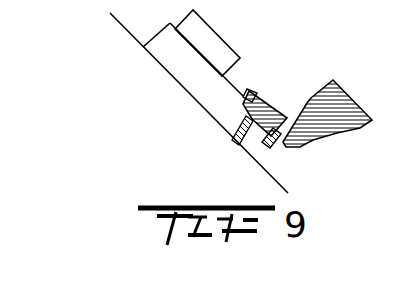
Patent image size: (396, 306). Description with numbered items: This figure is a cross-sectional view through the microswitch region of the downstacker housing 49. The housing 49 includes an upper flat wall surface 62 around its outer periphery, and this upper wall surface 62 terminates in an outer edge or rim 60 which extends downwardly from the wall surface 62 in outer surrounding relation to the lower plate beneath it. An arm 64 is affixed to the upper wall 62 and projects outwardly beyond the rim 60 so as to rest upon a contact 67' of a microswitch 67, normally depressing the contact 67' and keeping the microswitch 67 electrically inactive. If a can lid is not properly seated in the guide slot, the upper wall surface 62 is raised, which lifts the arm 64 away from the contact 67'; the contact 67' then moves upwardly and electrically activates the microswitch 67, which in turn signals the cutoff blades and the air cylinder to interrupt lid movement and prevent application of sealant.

The microswitch 67 is at (199, 101).
The contact 67' is at (263, 75).
The arm 64 is at (262, 89).
The outer edge or rim 60 is at (242, 143).
The upper flat wall surface 62 is at (258, 145).
The downstacker housing 49 is at (308, 100).